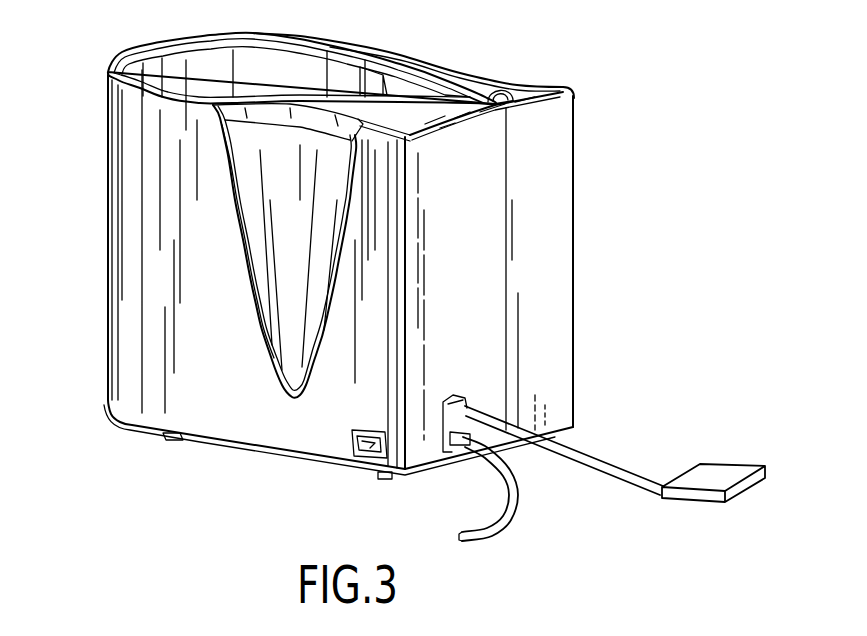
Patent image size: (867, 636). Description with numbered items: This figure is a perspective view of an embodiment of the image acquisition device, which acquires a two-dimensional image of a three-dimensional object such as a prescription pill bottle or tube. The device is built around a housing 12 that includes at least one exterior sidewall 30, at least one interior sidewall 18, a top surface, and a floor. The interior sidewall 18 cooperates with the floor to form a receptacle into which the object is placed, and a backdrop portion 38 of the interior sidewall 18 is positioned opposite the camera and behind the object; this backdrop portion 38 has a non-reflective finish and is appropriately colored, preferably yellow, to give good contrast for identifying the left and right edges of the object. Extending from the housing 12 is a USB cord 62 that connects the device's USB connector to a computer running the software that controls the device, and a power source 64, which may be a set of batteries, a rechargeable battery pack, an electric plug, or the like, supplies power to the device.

The housing 12 is at (547, 245).
The interior sidewall 18 is at (313, 70).
The exterior sidewall 30 is at (130, 285).
The backdrop portion 38 is at (202, 64).
The USB cord 62 is at (490, 537).
The power source 64 is at (703, 480).